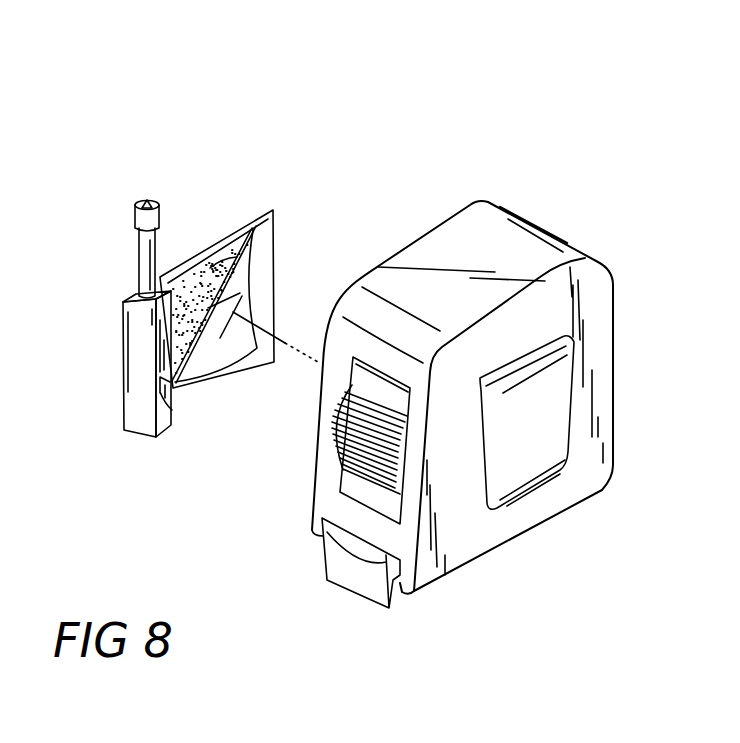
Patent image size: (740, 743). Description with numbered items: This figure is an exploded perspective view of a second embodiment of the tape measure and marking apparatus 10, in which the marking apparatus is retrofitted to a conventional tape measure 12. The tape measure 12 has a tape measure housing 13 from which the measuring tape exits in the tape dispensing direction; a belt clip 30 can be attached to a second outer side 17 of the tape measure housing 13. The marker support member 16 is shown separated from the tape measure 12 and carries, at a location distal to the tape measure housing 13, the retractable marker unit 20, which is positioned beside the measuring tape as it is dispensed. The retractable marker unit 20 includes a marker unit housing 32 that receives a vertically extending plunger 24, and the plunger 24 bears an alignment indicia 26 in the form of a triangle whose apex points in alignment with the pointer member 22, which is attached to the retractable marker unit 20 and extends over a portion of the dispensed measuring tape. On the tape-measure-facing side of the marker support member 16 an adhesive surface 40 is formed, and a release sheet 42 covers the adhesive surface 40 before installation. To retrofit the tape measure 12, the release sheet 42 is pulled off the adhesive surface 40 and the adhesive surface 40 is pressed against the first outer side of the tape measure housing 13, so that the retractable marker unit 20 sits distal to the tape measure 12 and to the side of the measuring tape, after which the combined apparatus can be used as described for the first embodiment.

The tape measure and marking apparatus 10 is at (270, 172).
The tape measure 12 is at (566, 232).
The tape measure housing 13 is at (488, 238).
The marker support member 16 is at (200, 252).
The second outer side 17 is at (600, 342).
The retractable marker unit 20 is at (116, 367).
The pointer member 22 is at (173, 415).
The plunger 24 is at (138, 259).
The alignment indicia 26 is at (133, 204).
The belt clip 30 is at (540, 423).
The marker unit housing 32 is at (141, 412).
The adhesive surface 40 is at (271, 212).
The release sheet 42 is at (247, 280).